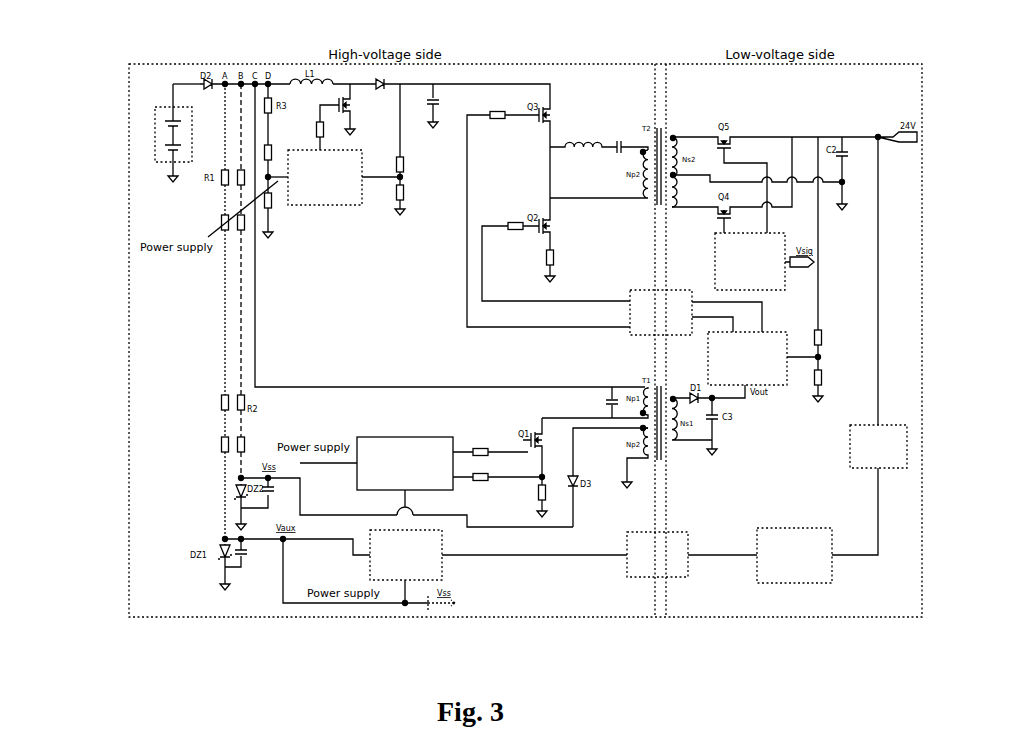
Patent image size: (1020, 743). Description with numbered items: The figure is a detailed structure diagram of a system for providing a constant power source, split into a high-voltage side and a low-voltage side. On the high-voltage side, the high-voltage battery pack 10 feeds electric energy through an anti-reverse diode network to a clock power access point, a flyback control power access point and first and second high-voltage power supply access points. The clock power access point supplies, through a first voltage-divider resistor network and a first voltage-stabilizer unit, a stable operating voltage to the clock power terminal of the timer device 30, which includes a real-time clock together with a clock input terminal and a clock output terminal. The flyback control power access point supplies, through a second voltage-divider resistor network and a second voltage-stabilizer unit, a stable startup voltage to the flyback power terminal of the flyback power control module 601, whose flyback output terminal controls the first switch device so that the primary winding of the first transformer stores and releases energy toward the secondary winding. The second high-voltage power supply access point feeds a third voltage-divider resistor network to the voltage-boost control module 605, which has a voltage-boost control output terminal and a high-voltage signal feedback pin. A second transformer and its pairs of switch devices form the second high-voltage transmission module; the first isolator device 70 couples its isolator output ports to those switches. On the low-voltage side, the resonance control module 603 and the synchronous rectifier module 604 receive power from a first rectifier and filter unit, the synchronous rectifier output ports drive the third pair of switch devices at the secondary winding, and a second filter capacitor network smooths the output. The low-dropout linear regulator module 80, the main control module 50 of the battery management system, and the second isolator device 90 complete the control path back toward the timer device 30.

The high-voltage battery pack 10 is at (148, 140).
The timer device 30 is at (406, 555).
The main control module 50 is at (794, 555).
The first isolator device 70 is at (661, 312).
The low-dropout linear regulator module 80 is at (878, 446).
The second isolator device 90 is at (657, 554).
The flyback power control module 601 is at (405, 463).
The resonance control module 603 is at (747, 358).
The synchronous rectifier module 604 is at (750, 261).
The voltage-boost control module 605 is at (344, 177).